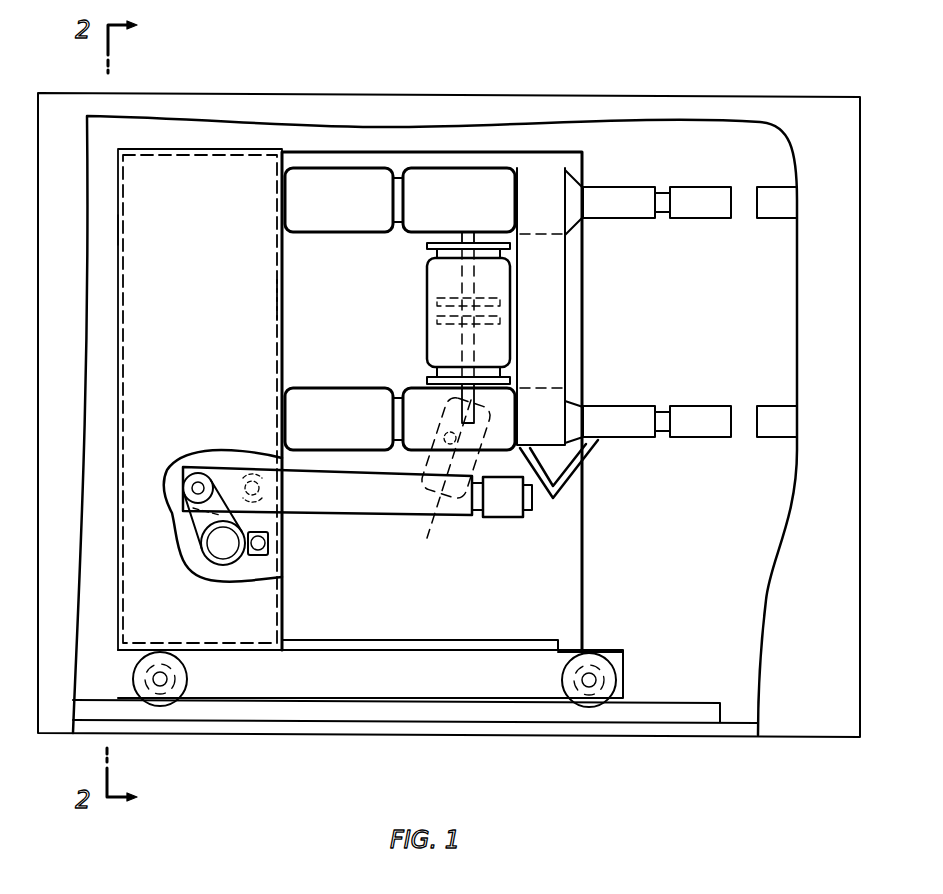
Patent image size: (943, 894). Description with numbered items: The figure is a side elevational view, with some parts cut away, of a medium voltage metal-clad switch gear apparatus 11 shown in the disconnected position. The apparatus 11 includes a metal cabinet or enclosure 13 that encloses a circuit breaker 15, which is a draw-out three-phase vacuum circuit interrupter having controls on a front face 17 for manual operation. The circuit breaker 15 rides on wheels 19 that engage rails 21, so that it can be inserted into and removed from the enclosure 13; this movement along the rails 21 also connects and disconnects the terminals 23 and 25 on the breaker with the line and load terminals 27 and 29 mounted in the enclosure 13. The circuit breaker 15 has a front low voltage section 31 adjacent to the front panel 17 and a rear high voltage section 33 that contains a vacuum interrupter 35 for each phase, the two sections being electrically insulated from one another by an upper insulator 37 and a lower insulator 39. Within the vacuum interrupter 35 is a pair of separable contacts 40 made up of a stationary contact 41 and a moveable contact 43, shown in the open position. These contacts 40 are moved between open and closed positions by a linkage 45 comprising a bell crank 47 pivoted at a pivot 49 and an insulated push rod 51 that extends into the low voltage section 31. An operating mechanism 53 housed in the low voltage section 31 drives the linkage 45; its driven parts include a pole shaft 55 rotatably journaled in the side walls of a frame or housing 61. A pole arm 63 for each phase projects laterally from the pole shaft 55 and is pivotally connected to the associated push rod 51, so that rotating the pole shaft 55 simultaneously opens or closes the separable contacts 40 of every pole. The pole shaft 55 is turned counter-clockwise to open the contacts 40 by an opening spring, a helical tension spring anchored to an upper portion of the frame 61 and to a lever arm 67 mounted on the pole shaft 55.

The switch gear apparatus 11 is at (497, 58).
The enclosure 13 is at (736, 95).
The circuit breaker 15 is at (605, 563).
The front face 17 is at (117, 228).
The wheels 19 is at (163, 703).
The rails 21 is at (680, 703).
The terminal 23 is at (711, 190).
The terminal 25 is at (711, 408).
The line terminal 27 is at (773, 212).
The load terminal 29 is at (773, 432).
The low voltage section 31 is at (183, 140).
The high voltage section 33 is at (590, 140).
The vacuum interrupter 35 is at (433, 268).
The upper insulator 37 is at (340, 225).
The lower insulator 39 is at (305, 386).
The separable contacts 40 is at (424, 312).
The stationary contact 41 is at (512, 296).
The moveable contact 43 is at (512, 324).
The linkage 45 is at (477, 540).
The bell crank 47 is at (441, 482).
The pivot 49 is at (440, 428).
The insulated push rod 51 is at (333, 505).
The operating mechanism 53 is at (180, 440).
The pole shaft 55 is at (218, 556).
The frame 61 is at (283, 298).
The pole arm 63 is at (212, 486).
The lever arm 67 is at (268, 553).